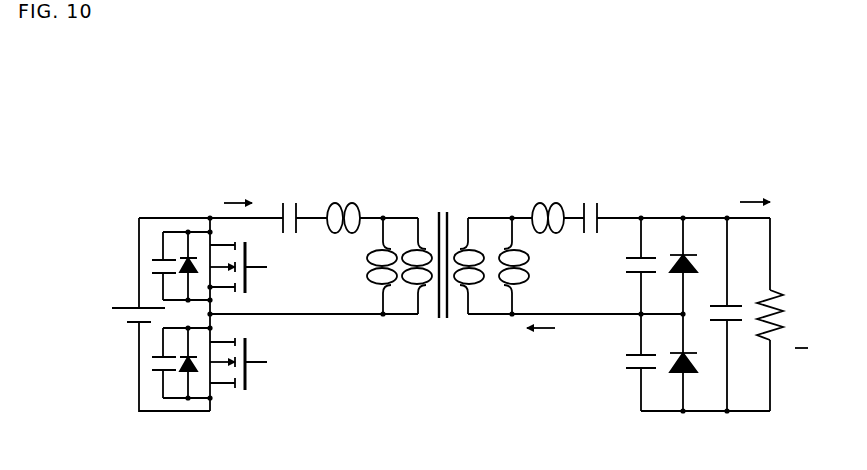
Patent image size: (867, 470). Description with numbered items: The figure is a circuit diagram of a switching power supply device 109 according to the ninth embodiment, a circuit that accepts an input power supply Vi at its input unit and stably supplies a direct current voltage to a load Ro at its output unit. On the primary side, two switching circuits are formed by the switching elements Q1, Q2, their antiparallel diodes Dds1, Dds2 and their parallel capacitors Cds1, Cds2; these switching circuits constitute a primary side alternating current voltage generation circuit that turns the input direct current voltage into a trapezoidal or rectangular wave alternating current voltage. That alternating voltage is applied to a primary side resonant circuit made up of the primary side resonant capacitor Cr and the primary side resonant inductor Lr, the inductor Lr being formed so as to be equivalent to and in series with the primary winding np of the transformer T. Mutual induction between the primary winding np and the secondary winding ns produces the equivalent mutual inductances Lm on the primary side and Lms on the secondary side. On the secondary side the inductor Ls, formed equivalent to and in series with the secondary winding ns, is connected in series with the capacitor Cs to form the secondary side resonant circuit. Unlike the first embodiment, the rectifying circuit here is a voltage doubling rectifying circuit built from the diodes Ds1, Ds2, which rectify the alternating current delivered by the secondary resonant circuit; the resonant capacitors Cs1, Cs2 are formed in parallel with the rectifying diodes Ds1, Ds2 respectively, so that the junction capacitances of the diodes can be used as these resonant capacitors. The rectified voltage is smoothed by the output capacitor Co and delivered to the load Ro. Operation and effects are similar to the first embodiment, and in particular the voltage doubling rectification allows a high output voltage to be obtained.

The switching power supply device 109 is at (801, 152).
The input power supply Vi is at (137, 301).
The primary side resonant capacitor Cr is at (287, 206).
The primary side resonant inductor Lr is at (343, 206).
The equivalent mutual inductance Lm is at (364, 266).
The transformer T is at (440, 255).
The primary winding np is at (411, 254).
The secondary winding ns is at (471, 253).
The secondary side mutual inductance Lms is at (527, 266).
The secondary side resonant inductor Ls is at (548, 205).
The secondary side resonant capacitor Cs is at (592, 205).
The secondary side resonant capacitor Cs1 is at (630, 349).
The secondary side resonant capacitor Cs2 is at (630, 251).
The rectifying diode Ds1 is at (692, 351).
The rectifying diode Ds2 is at (692, 251).
The output capacitor Co is at (721, 299).
The load Ro is at (762, 309).
The switching element Q1 is at (250, 364).
The switching element Q2 is at (250, 267).
The parallel capacitor Cds1 is at (164, 383).
The parallel capacitor Cds2 is at (162, 245).
The antiparallel diode Dds1 is at (195, 383).
The antiparallel diode Dds2 is at (194, 245).